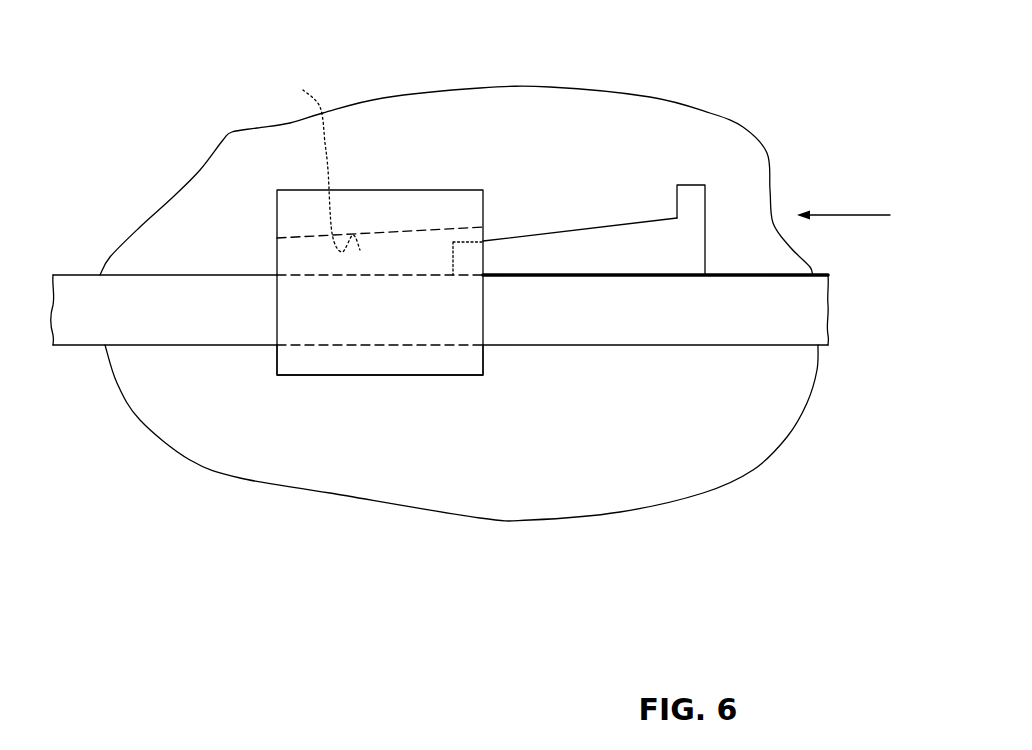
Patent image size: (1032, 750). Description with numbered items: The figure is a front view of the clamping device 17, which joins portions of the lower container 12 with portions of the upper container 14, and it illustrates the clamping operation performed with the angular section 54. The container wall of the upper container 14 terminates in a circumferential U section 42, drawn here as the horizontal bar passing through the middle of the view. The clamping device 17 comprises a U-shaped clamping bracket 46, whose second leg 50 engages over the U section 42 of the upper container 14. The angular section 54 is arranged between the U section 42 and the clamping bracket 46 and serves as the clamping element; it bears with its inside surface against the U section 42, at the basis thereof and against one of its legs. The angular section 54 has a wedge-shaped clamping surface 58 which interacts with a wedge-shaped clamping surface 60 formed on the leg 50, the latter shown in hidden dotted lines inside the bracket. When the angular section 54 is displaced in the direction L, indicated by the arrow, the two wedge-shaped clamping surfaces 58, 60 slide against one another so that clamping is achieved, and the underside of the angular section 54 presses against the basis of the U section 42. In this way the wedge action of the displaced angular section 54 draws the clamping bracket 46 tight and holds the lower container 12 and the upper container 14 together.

The lower container 12 is at (503, 502).
The upper container 14 is at (232, 153).
The clamping device 17 is at (393, 128).
The U section 42 is at (818, 307).
The clamping bracket 46 is at (397, 376).
The second leg 50 is at (448, 203).
The angular section 54 is at (690, 198).
The wedge-shaped clamping surface 58 is at (571, 231).
The wedge-shaped clamping surface 60 is at (314, 164).
The direction L is at (837, 215).